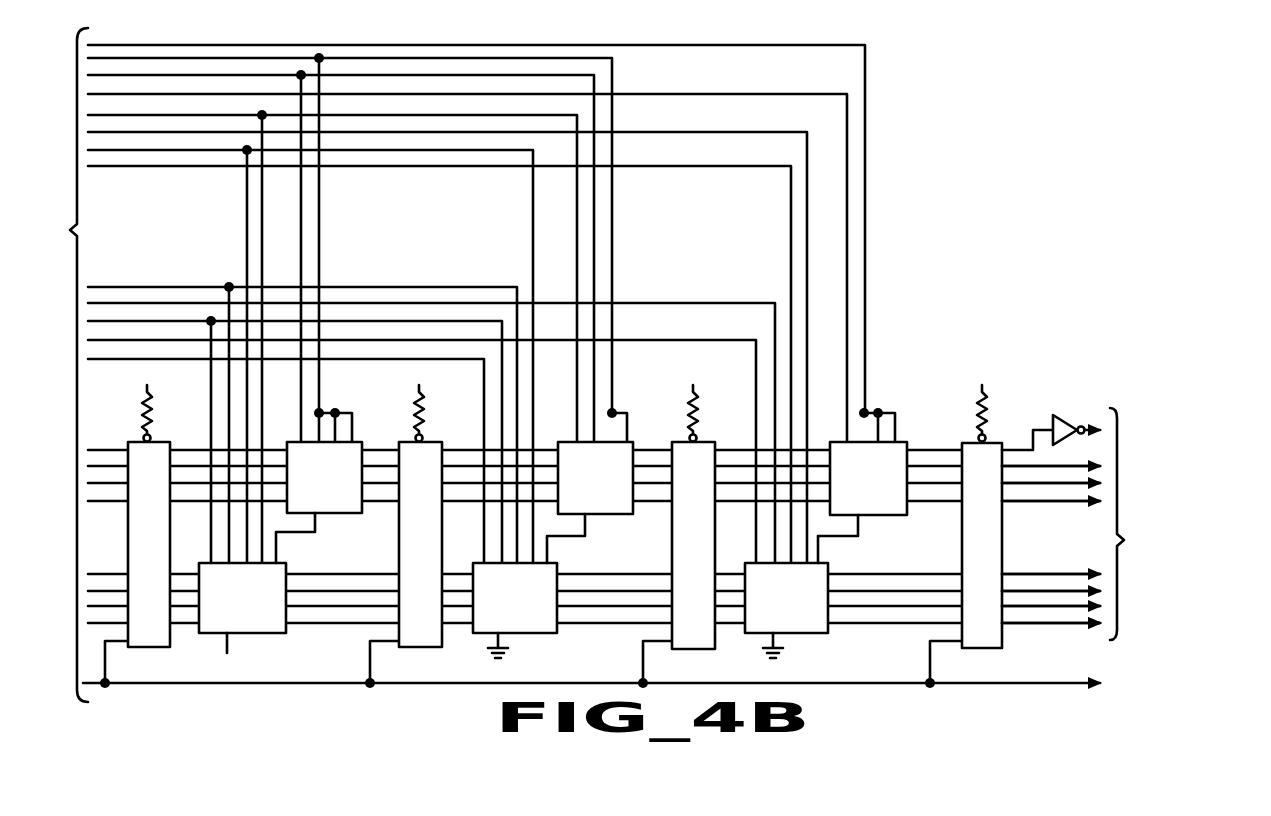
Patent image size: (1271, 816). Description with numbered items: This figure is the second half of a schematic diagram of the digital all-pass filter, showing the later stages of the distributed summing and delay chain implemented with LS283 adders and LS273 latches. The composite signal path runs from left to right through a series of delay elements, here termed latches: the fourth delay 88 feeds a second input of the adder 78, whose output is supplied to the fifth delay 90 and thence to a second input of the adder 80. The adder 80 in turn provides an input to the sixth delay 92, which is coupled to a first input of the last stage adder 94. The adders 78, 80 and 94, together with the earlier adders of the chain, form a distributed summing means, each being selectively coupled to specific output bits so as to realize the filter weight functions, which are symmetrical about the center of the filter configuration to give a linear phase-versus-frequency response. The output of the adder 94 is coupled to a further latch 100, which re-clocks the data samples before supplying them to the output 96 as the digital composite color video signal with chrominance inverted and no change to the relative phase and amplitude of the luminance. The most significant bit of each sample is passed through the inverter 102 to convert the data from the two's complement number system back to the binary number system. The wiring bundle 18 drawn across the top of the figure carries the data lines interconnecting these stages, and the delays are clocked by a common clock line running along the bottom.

The data bus lines 18 is at (430, 225).
The adder 78 is at (300, 558).
The adder 80 is at (570, 562).
The last stage adder 94 is at (860, 562).
The fourth delay 88 is at (165, 440).
The fifth delay 90 is at (434, 440).
The sixth delay 92 is at (712, 440).
The latch 100 is at (990, 442).
The inverter 102 is at (1069, 420).
The output 96 is at (1122, 440).